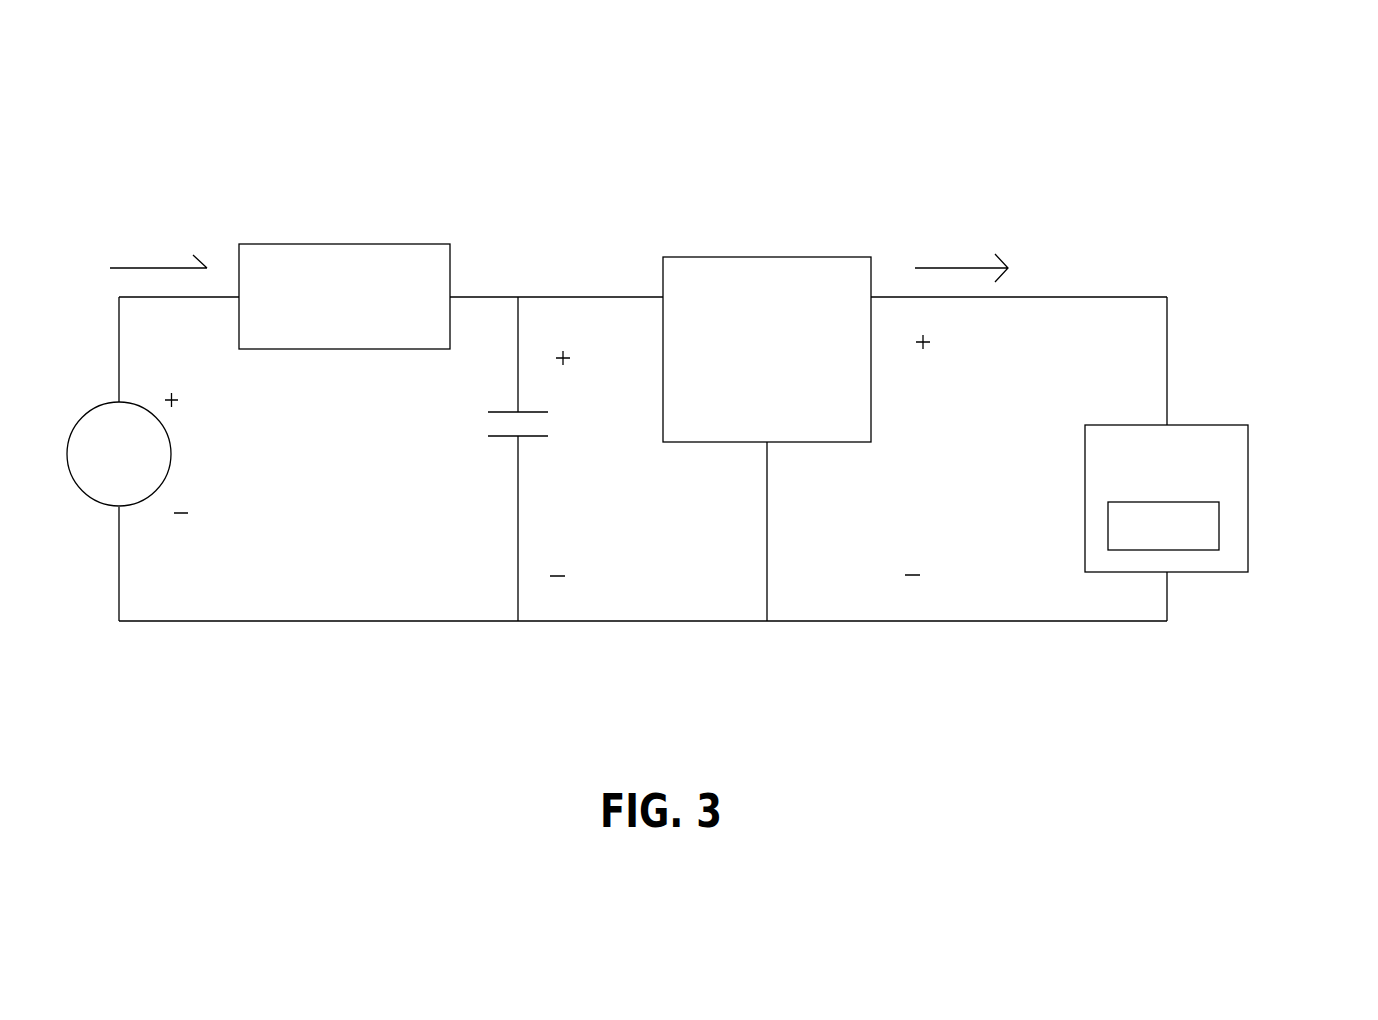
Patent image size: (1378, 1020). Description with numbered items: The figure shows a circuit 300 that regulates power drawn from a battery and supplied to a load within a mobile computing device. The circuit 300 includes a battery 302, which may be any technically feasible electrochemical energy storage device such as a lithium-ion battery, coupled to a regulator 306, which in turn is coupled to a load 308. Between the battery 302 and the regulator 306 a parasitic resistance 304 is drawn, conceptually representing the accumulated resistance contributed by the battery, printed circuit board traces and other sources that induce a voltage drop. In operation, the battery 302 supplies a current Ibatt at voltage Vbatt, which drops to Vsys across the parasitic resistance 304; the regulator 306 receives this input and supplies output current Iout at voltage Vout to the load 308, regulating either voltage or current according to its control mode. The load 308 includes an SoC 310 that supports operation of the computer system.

The circuit 300 is at (1080, 90).
The battery 302 is at (140, 464).
The parasitic resistance 304 is at (365, 337).
The regulator 306 is at (788, 377).
The load 308 is at (1187, 491).
The SoC 310 is at (1219, 518).